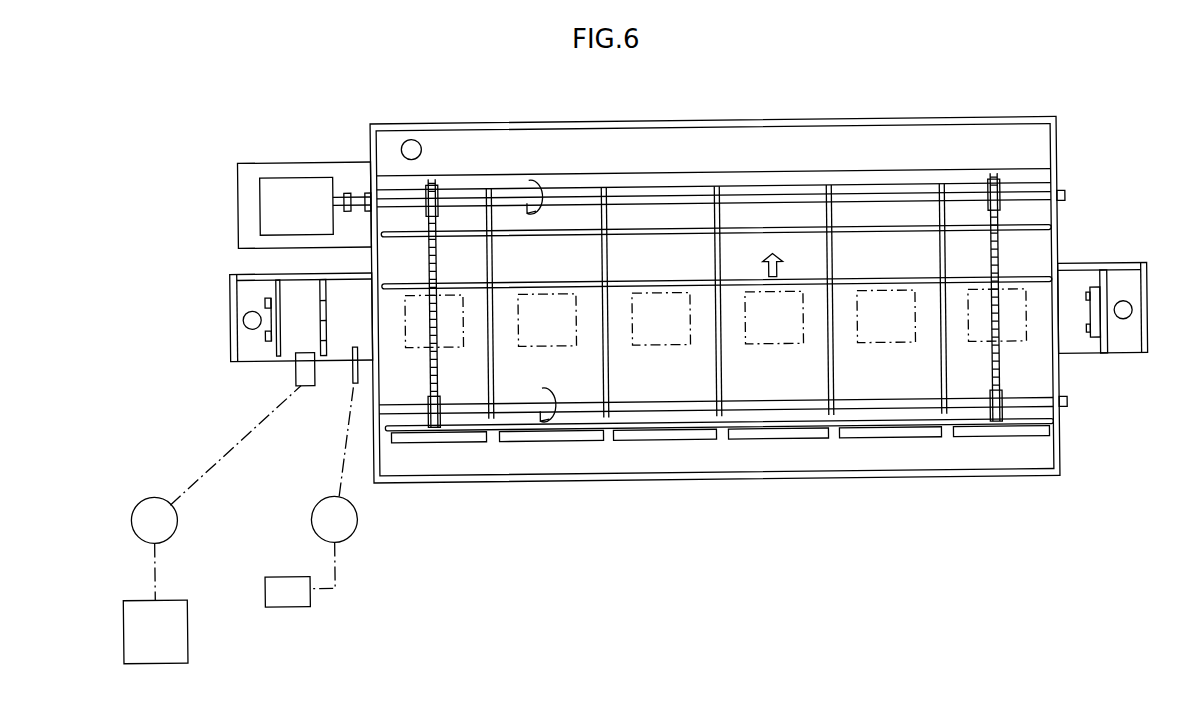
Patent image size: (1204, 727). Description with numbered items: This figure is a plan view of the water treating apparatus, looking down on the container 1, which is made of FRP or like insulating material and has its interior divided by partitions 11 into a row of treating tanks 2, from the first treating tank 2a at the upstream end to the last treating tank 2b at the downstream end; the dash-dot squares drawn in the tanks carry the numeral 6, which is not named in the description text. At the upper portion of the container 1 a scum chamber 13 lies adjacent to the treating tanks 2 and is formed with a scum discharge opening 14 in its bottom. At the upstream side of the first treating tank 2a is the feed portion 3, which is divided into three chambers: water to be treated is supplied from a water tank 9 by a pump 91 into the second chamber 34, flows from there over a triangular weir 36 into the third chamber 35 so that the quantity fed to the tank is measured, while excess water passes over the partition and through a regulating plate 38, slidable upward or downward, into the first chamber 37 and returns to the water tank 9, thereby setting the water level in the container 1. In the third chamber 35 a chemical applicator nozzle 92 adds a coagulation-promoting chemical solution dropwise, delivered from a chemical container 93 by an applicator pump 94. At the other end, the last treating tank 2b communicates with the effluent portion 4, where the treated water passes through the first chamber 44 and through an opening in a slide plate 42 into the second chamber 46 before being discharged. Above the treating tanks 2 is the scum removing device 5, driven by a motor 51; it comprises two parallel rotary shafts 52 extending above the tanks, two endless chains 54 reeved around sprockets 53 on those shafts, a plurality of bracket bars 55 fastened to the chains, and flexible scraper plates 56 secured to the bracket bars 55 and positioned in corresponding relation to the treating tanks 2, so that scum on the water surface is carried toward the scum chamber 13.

The container 1 is at (834, 486).
The treating tanks 2 is at (592, 388).
The first treating tank 2a is at (482, 388).
The last treating tank 2b is at (980, 382).
The feed portion 3 is at (224, 341).
The effluent portion 4 is at (1152, 322).
The scum removing device 5 is at (325, 157).
The workpiece carrier 6 is at (462, 346).
The water tank 9 is at (128, 617).
The partitions 11 is at (493, 369).
The scum chamber 13 is at (546, 148).
The scum discharge opening 14 is at (413, 139).
The second chamber 34 is at (299, 297).
The third chamber 35 is at (356, 268).
The triangular weir 36 is at (327, 325).
The first chamber 37 is at (244, 292).
The regulating plate 38 is at (265, 310).
The slide plate 42 is at (1096, 312).
The first chamber 44 is at (1081, 352).
The second chamber 46 is at (1123, 349).
The motor 51 is at (290, 210).
The rotary shafts 52 is at (700, 199).
The sprockets 53 is at (443, 196).
The endless chains 54 is at (439, 266).
The bracket bars 55 is at (766, 232).
The scraper plates 56 is at (886, 437).
The pump 91 is at (129, 518).
The chemical applicator nozzle 92 is at (340, 378).
The chemical container 93 is at (281, 597).
The applicator pump 94 is at (350, 532).